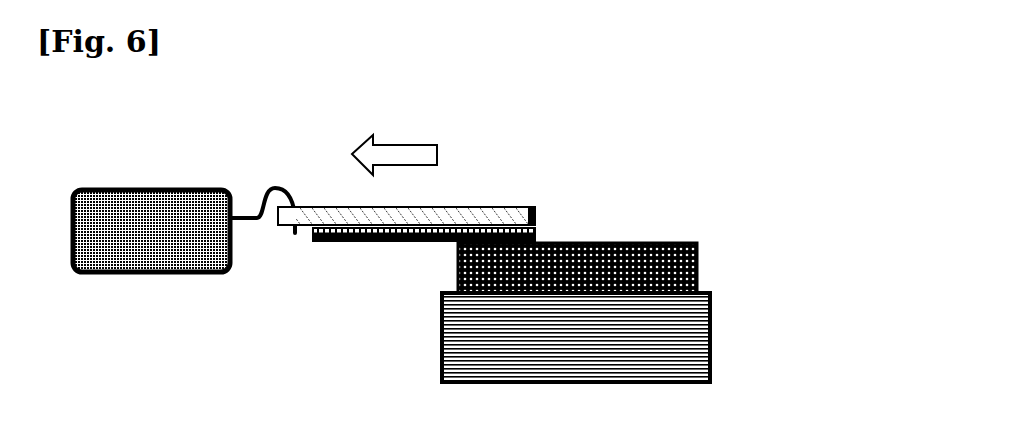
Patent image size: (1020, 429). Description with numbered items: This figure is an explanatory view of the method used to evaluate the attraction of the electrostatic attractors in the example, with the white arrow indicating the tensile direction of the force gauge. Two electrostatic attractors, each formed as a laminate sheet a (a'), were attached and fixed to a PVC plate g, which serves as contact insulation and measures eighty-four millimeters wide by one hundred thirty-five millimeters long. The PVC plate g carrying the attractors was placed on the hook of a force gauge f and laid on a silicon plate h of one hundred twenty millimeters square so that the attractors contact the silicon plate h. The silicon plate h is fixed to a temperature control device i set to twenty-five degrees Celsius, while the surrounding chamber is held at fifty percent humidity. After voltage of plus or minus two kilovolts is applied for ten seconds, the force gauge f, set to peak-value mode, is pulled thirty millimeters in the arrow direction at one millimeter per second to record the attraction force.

The force gauge f is at (151, 231).
The PVC plate g is at (503, 217).
The laminate sheet a is at (537, 228).
The silicon plate h is at (577, 268).
The temperature control device i is at (576, 337).